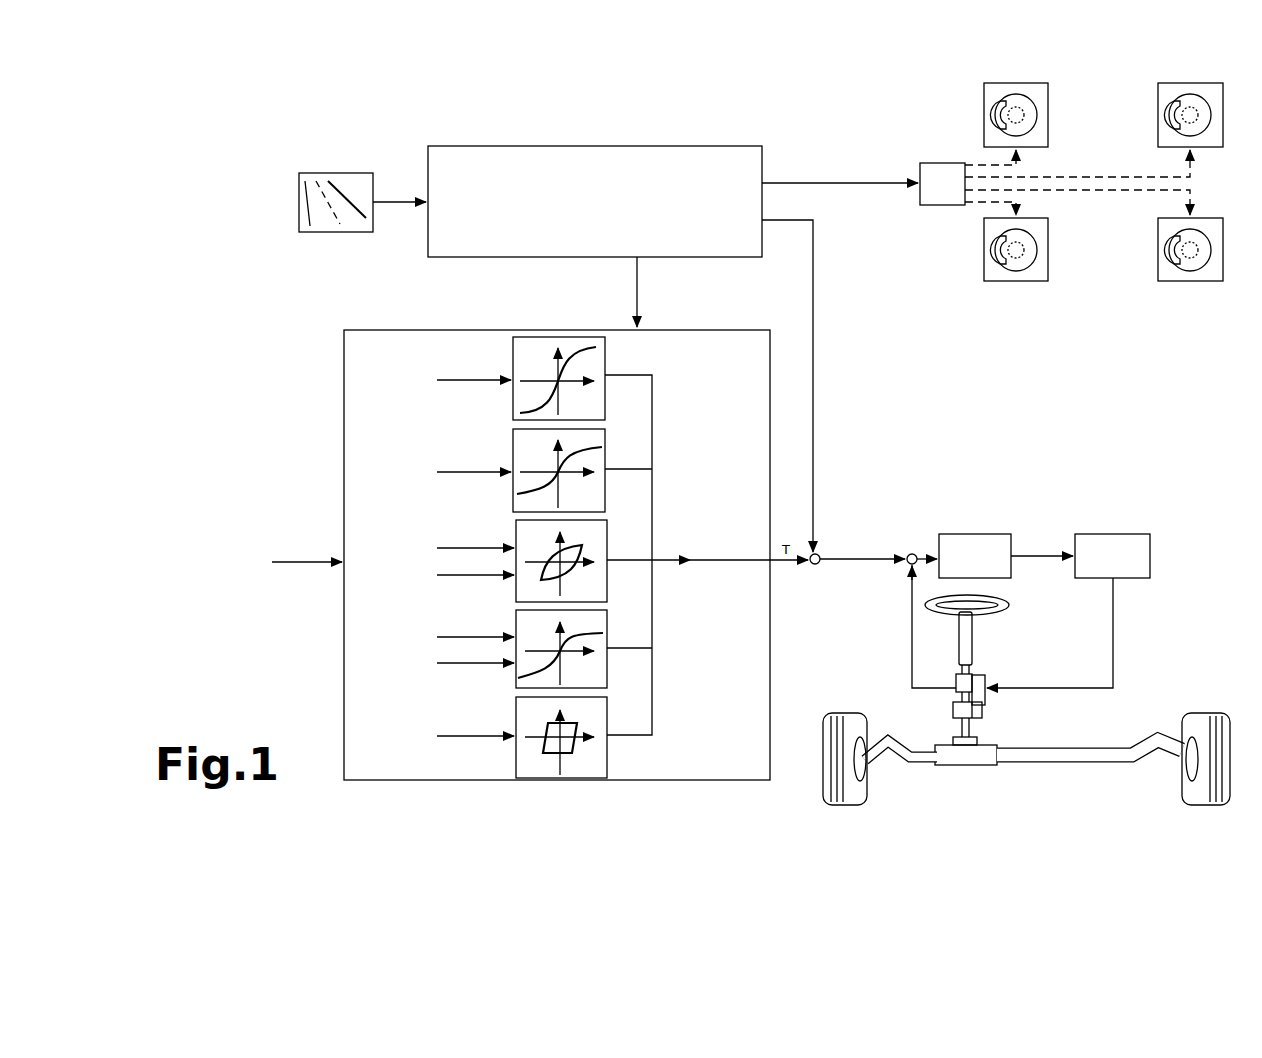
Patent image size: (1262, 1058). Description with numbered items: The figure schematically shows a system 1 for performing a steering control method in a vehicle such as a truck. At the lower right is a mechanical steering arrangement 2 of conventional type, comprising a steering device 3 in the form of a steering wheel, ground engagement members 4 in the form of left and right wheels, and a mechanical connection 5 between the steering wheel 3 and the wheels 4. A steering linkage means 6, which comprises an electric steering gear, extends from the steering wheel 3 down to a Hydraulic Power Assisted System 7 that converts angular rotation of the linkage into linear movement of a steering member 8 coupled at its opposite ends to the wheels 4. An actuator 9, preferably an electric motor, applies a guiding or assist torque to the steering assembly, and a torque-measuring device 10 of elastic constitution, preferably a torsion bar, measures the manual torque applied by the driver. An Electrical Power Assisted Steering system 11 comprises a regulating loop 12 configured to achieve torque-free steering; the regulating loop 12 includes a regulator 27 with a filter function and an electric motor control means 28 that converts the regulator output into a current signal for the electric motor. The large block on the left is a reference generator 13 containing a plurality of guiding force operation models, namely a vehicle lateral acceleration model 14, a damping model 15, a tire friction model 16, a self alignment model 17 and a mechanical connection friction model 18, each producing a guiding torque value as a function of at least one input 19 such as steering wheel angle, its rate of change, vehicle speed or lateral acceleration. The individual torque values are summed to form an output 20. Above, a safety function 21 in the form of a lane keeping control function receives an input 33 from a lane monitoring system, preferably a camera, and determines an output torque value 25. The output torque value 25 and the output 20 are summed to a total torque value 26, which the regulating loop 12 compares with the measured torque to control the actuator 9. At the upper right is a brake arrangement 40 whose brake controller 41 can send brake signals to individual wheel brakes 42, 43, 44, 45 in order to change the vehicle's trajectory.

The system 1 is at (923, 350).
The mechanical steering arrangement 2 is at (1120, 720).
The steering device 3 is at (1000, 598).
The ground engagement member 4 is at (845, 715).
The mechanical connection 5 is at (1002, 732).
The steering linkage means 6 is at (982, 653).
The Hydraulic Power Assisted System (HPAS) 7 is at (962, 752).
The steering member 8 is at (1040, 766).
The actuator 9 is at (990, 676).
The torque-measuring device 10 is at (956, 684).
The Electrical Power Assisted Steering (EPAS) system 11 is at (858, 455).
The regulating loop 12 is at (1137, 632).
The controlling function (reference generator) 13 is at (722, 322).
The vehicle lateral acceleration model 14 is at (605, 355).
The damping model 15 is at (605, 438).
The tire friction model 16 is at (607, 528).
The self alignment model 17 is at (607, 615).
The mechanical connection friction model 18 is at (607, 757).
The input 19 is at (310, 566).
The output 20 is at (788, 564).
The safety function (lane keeping control function) 21 is at (674, 134).
The output torque value 25 is at (816, 335).
The total torque value 26 is at (874, 557).
The controller (regulator) 27 is at (977, 533).
The electric motor control means 28 is at (1105, 533).
The lane monitoring system (input) 33 is at (330, 234).
The brake arrangement (braking system) 40 is at (992, 183).
The brake controller 41 is at (940, 206).
The wheel brake (brake device) 42 is at (1048, 103).
The wheel brake (brake device) 43 is at (1048, 248).
The wheel brake (brake device) 44 is at (1158, 116).
The wheel brake (brake device) 45 is at (1158, 258).